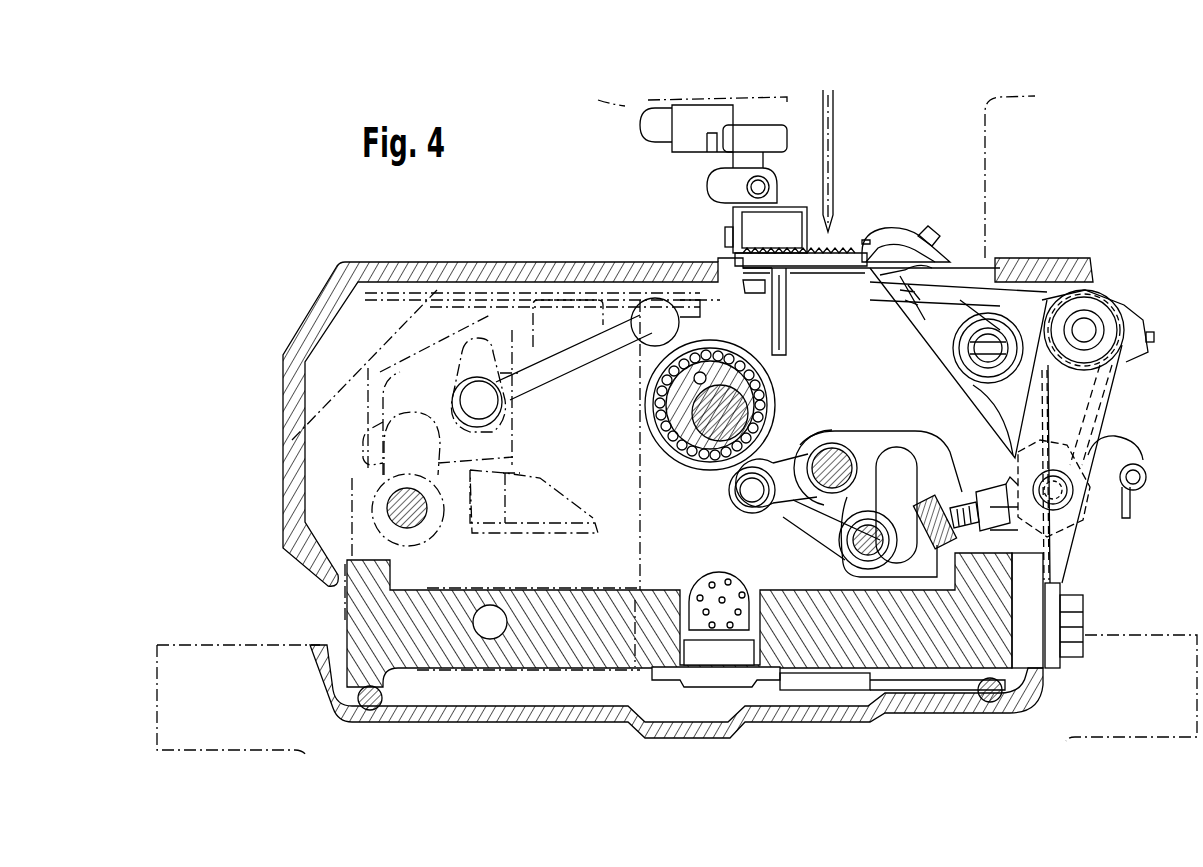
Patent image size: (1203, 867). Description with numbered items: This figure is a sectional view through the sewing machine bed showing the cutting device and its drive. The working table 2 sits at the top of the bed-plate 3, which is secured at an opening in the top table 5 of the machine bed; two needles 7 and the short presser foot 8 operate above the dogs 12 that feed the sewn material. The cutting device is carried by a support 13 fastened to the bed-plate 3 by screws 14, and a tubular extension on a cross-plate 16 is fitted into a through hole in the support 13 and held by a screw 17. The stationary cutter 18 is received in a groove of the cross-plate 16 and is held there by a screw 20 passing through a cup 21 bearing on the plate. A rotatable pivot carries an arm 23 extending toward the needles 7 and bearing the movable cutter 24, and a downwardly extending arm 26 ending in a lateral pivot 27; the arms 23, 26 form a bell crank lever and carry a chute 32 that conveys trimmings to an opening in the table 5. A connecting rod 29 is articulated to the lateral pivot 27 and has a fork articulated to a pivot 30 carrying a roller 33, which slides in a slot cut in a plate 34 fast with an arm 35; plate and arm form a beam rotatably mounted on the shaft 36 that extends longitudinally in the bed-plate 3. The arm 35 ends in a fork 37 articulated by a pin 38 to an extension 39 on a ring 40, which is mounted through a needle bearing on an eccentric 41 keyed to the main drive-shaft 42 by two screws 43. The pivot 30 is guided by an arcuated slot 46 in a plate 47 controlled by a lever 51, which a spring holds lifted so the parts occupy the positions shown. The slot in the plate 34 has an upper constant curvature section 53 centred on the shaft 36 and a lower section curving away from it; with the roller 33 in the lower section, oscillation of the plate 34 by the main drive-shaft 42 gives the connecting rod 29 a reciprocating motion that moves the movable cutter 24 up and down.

The working table 2 is at (538, 262).
The bed-plate 3 is at (426, 594).
The top table 5 is at (199, 652).
The needles 7 is at (836, 163).
The presser foot 8 is at (845, 252).
The dogs 12 is at (797, 268).
The support 13 is at (1058, 552).
The screws 14 is at (1082, 612).
The cross-plate 16 is at (1003, 312).
The screw 17 is at (1142, 333).
The stationary cutter 18 is at (907, 262).
The screw 20 is at (983, 360).
The cup 21 is at (992, 372).
The arm 23 is at (1027, 293).
The movable cutter 24 is at (894, 228).
The arm 26 is at (1105, 402).
The lateral pivot 27 is at (1090, 510).
The connecting rod 29 is at (972, 491).
The pivot 30 is at (888, 552).
The chute 32 is at (1140, 450).
The roller 33 is at (850, 541).
The plate 34 is at (873, 445).
The arm 35 is at (790, 458).
The shaft 36 is at (832, 443).
The fork 37 is at (758, 503).
The pin 38 is at (745, 495).
The extension 39 is at (727, 483).
The ring 40 is at (772, 398).
The eccentric 41 is at (660, 378).
The main drive-shaft 42 is at (695, 437).
The screws 43 is at (667, 375).
The arcuated slot 46 is at (825, 524).
The plate 47 is at (926, 503).
The lever 51 is at (1147, 482).
The upper constant curvature section 53 is at (900, 463).